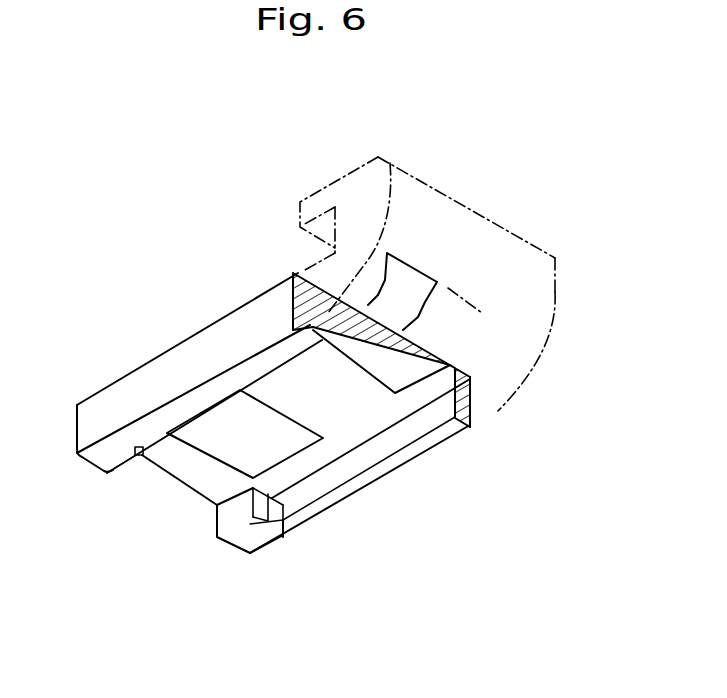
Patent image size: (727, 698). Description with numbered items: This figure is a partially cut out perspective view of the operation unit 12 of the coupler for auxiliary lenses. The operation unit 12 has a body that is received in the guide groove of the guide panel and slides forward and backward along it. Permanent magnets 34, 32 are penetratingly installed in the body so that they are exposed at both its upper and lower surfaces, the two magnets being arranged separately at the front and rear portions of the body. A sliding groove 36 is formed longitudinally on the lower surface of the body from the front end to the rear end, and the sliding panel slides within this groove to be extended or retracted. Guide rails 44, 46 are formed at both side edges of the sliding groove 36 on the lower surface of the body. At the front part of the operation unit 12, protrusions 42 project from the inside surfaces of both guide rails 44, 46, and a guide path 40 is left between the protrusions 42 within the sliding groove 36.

The operation unit 12 is at (87, 168).
The permanent magnet 32 is at (437, 282).
The permanent magnet 34 is at (233, 443).
The sliding groove 36 is at (347, 420).
The guide path 40 is at (153, 504).
The protrusion 42 is at (270, 498).
The guide rail 44 is at (297, 274).
The guide rail 46 is at (538, 404).